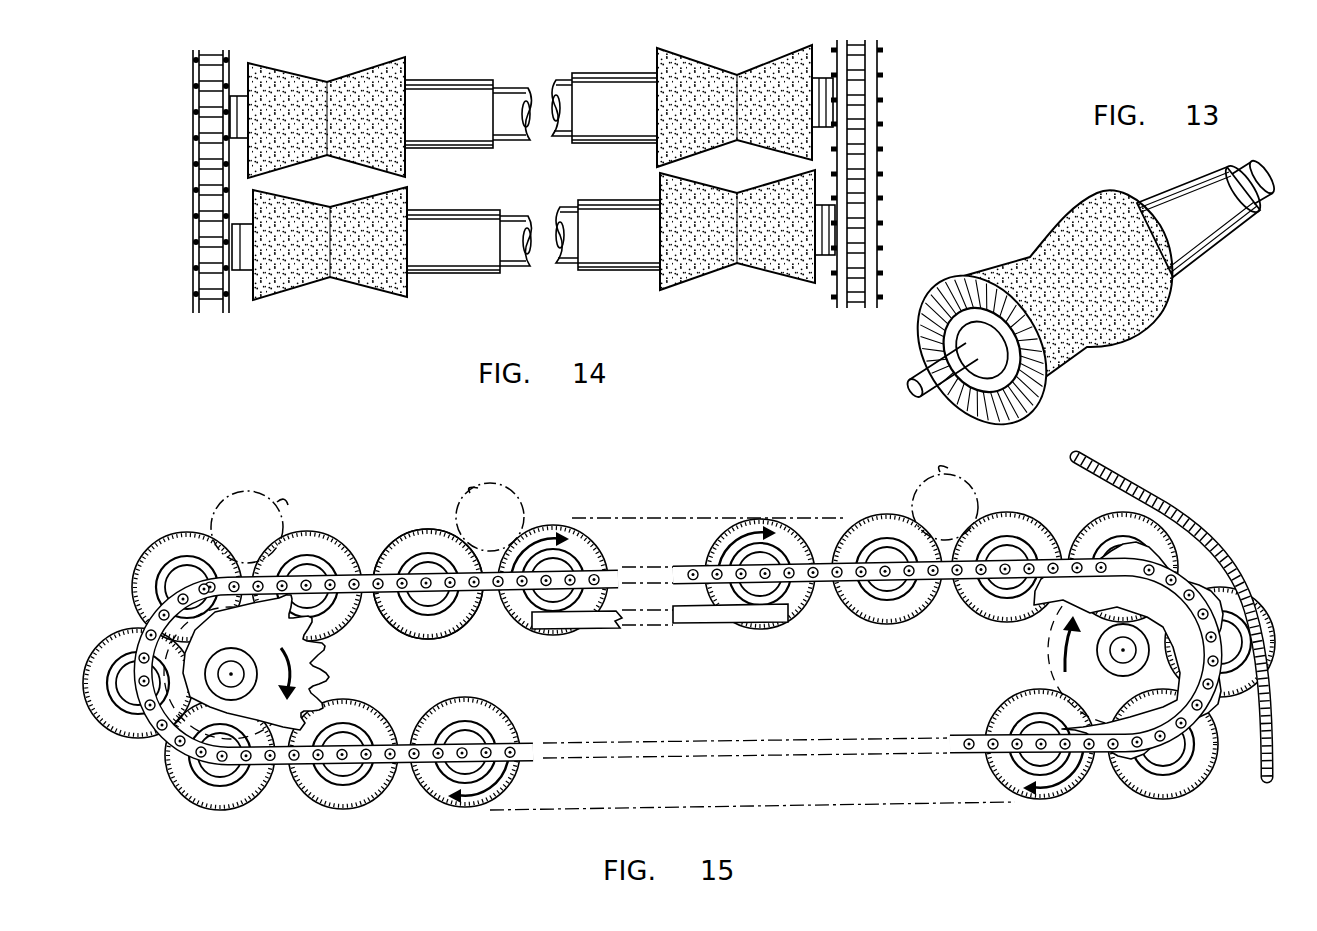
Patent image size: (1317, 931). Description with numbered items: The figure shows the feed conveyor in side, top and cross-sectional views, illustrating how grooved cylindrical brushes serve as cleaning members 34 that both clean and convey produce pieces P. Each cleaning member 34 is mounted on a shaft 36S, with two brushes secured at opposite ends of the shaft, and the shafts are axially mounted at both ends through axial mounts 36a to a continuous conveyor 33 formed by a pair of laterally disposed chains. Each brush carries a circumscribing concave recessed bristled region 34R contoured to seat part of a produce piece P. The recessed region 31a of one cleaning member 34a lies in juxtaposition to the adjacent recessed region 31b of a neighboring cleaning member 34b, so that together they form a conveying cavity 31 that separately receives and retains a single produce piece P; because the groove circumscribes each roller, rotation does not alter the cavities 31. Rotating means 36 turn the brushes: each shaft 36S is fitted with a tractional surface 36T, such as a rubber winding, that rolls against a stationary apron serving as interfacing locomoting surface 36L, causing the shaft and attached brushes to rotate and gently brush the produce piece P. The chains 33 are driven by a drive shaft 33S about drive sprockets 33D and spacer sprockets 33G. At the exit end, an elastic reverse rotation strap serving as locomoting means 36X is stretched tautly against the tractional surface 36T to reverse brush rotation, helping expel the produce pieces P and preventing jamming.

In FIG. 14, the conveying cavity 31 is at (595, 199).
In FIG. 14, the recessed cleaning region 31a is at (595, 112).
In FIG. 14, the adjacent recessed region 31b is at (737, 249).
In FIG. 14, the continuous conveyor 33 is at (195, 158).
In FIG. 15, the continuous conveyor 33 is at (677, 573).
In FIG. 15, the spacer sprocket 33G is at (327, 683).
In FIG. 15, the drive shaft 33S is at (1030, 670).
In FIG. 15, the drive sprocket 33D is at (1103, 697).
In FIG. 15, the cleaning member 34 is at (679, 641).
In FIG. 14, the cleaning member 34a is at (812, 156).
In FIG. 15, the cleaning member 34a is at (395, 533).
In FIG. 14, the adjacent cleaning member 34b is at (534, 263).
In FIG. 13, the adjacent cleaning member 34b is at (1060, 247).
In FIG. 15, the adjacent cleaning member 34b is at (342, 540).
In FIG. 13, the recessed bristled region 34R is at (1031, 317).
In FIG. 15, the rotating means 36 is at (583, 633).
In FIG. 14, the axial mount 36a is at (880, 103).
In FIG. 15, the axial mount 36a is at (868, 558).
In FIG. 15, the interfacing locomoting surface 36L is at (660, 654).
In FIG. 14, the shaft 36S is at (562, 93).
In FIG. 13, the shaft 36S is at (907, 388).
In FIG. 14, the tractional surface 36T is at (452, 143).
In FIG. 13, the tractional surface 36T is at (1210, 238).
In FIG. 15, the locomoting means 36X is at (1103, 470).
In FIG. 15, the produce piece P is at (217, 490).